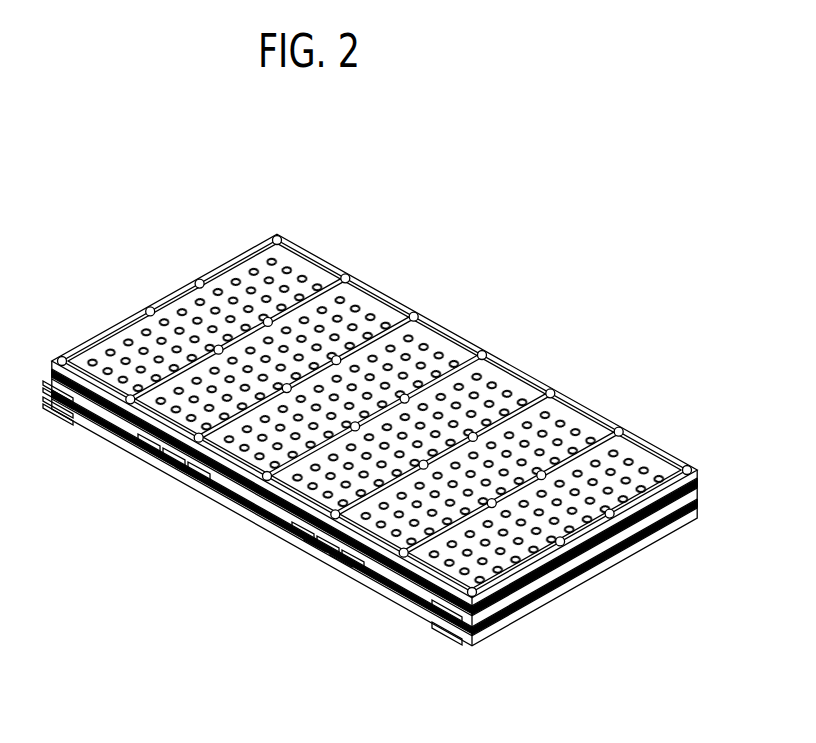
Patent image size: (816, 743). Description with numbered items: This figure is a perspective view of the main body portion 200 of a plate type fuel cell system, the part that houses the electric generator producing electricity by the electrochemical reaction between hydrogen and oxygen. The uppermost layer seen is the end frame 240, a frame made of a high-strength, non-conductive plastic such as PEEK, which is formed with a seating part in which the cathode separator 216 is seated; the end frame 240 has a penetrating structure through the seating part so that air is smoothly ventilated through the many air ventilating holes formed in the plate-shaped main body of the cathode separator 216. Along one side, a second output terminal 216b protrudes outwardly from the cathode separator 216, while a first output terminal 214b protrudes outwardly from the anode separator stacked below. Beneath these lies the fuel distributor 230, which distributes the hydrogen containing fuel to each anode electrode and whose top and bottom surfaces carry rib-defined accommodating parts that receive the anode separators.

The main body portion 200 is at (98, 208).
The end frame 240 is at (380, 292).
The cathode separator 216 is at (568, 428).
The second output terminal 216b is at (167, 465).
The first output terminal 214b is at (337, 547).
The fuel distributor 230 is at (517, 600).